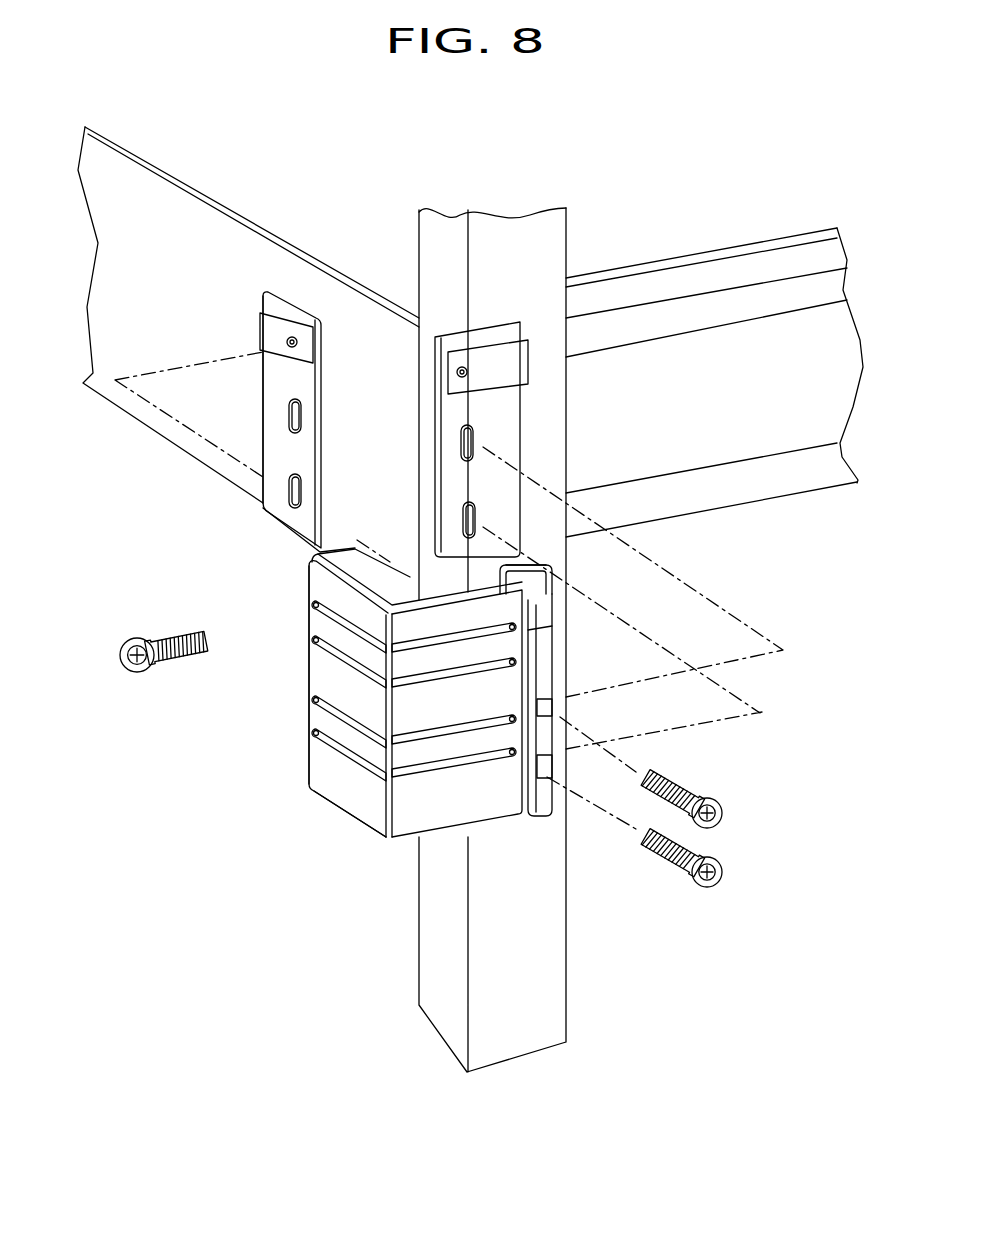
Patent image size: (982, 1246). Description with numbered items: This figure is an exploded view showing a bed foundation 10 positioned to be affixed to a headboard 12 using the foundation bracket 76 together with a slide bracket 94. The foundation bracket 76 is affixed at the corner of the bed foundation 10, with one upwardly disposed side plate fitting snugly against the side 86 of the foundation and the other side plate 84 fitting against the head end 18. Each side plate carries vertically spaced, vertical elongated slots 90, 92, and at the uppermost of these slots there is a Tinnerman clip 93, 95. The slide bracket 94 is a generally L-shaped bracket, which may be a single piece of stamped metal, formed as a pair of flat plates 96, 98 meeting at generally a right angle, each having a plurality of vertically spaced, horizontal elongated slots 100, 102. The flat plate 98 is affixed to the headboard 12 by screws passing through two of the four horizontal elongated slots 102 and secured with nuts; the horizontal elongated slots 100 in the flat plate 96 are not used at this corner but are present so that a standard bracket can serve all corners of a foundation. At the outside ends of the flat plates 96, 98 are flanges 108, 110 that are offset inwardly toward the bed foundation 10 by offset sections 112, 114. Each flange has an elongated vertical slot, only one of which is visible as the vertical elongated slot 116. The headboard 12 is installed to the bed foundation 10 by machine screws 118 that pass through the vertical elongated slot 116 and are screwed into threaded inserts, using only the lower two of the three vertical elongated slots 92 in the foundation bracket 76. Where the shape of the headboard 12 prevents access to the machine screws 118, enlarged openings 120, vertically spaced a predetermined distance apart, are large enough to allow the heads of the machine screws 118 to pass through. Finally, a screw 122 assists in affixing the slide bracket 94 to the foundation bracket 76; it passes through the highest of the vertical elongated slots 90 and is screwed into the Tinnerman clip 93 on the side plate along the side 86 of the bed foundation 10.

The bed foundation 10 is at (157, 513).
The headboard 12 is at (550, 955).
The head end 18 is at (728, 398).
The foundation bracket 76 is at (334, 365).
The side plate 84 is at (272, 520).
The side 86 is at (173, 326).
The vertical elongated slots 90 is at (303, 495).
The vertical elongated slots 92 is at (477, 440).
The Tinnerman clip 93 is at (268, 332).
The slide bracket 94 is at (367, 830).
The Tinnerman clip 95 is at (525, 370).
The flat plate 96 is at (320, 803).
The flat plate 98 is at (480, 807).
The horizontal elongated slots 100 is at (313, 715).
The horizontal elongated slots 102 is at (467, 722).
The flange 108 is at (348, 543).
The flange 110 is at (547, 580).
The offset section 112 is at (310, 560).
The offset section 114 is at (547, 565).
The vertical elongated slot 116 is at (537, 643).
The machine screws 118 is at (722, 866).
The enlarged openings 120 is at (567, 712).
The screw 122 is at (122, 657).